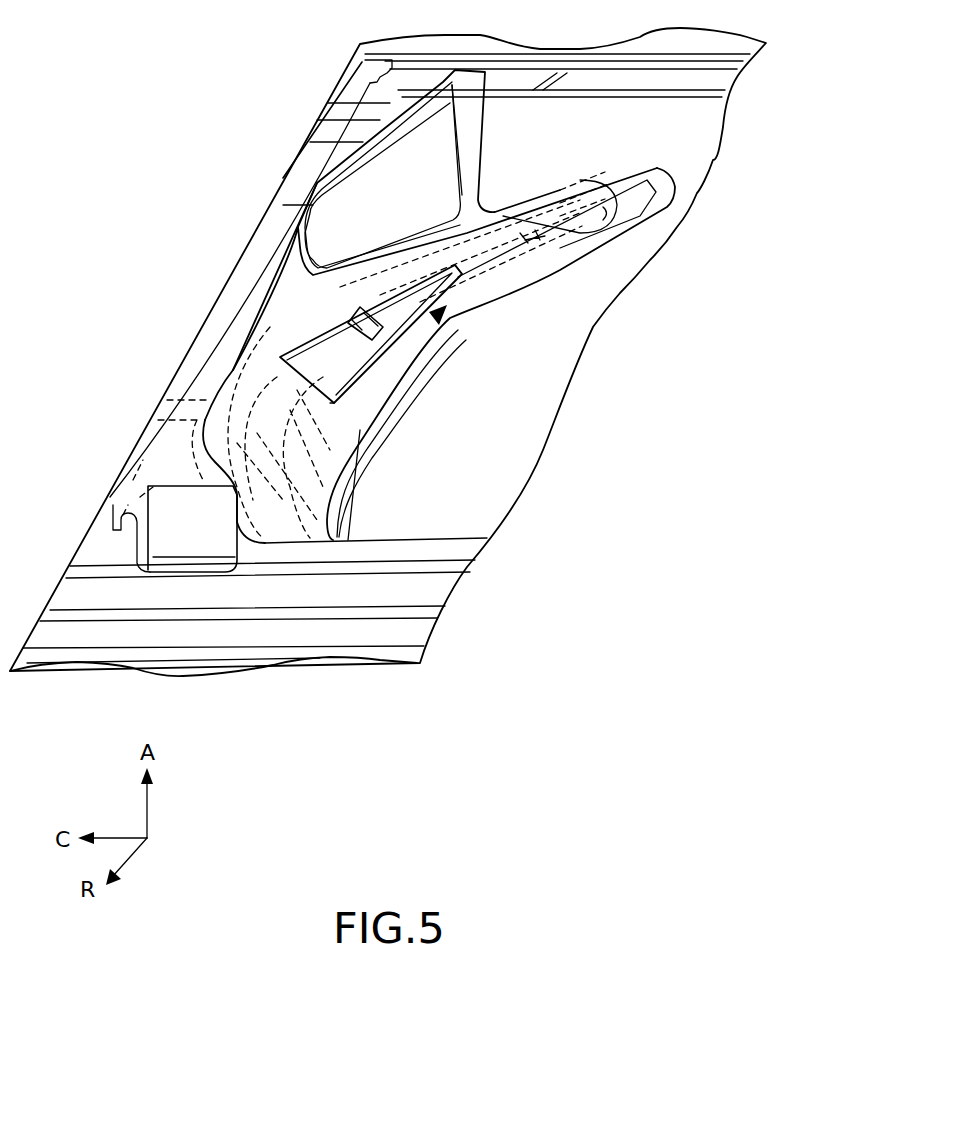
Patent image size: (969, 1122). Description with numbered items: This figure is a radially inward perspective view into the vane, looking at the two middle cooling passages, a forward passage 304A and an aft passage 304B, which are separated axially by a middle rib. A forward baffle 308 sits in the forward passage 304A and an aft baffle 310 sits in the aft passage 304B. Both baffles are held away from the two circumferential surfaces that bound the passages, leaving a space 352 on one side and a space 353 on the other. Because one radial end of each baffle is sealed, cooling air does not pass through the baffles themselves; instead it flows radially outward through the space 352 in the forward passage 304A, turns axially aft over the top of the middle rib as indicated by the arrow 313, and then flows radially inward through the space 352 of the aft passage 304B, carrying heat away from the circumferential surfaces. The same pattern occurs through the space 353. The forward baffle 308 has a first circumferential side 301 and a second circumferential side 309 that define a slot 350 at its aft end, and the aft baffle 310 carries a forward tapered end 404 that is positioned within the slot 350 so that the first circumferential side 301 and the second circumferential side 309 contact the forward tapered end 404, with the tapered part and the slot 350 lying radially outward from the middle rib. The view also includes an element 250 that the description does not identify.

The vehicle body side panel 250 is at (510, 440).
The first circumferential side 301 is at (336, 372).
The forward passage 304A is at (337, 358).
The aft passage 304B is at (428, 290).
The forward baffle 308 is at (305, 343).
The second circumferential side 309 is at (330, 340).
The aft baffle 310 is at (453, 290).
The arrow 313 is at (367, 390).
The slot 350 is at (345, 318).
The space 352 is at (455, 298).
The space 353 is at (362, 310).
The forward tapered end 404 is at (360, 315).